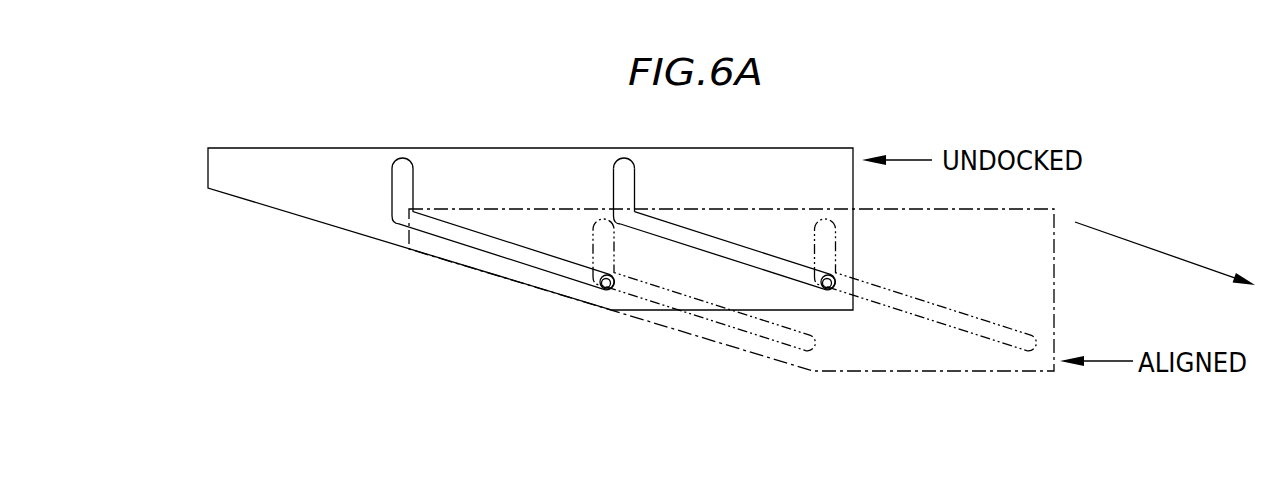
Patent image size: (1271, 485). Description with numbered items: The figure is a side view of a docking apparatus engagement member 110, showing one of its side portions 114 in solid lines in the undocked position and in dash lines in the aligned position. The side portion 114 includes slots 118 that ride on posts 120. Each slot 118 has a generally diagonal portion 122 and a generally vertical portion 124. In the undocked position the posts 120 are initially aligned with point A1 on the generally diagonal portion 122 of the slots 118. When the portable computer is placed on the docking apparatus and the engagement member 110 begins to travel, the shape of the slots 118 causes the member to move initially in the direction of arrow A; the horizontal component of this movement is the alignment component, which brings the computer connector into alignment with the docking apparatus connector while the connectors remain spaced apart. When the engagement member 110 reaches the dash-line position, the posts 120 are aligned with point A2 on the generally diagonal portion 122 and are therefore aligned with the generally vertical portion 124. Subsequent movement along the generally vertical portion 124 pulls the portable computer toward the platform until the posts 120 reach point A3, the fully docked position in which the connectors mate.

The docking apparatus engagement member 110 is at (207, 222).
The side portion 114 is at (258, 158).
The slot 118 is at (439, 175).
The post 120 is at (607, 285).
The generally diagonal portion 122 is at (738, 264).
The generally vertical portion 124 is at (634, 183).
The point A1 is at (838, 281).
The point A2 is at (630, 218).
The point A3 is at (627, 158).
The arrow A is at (1162, 252).